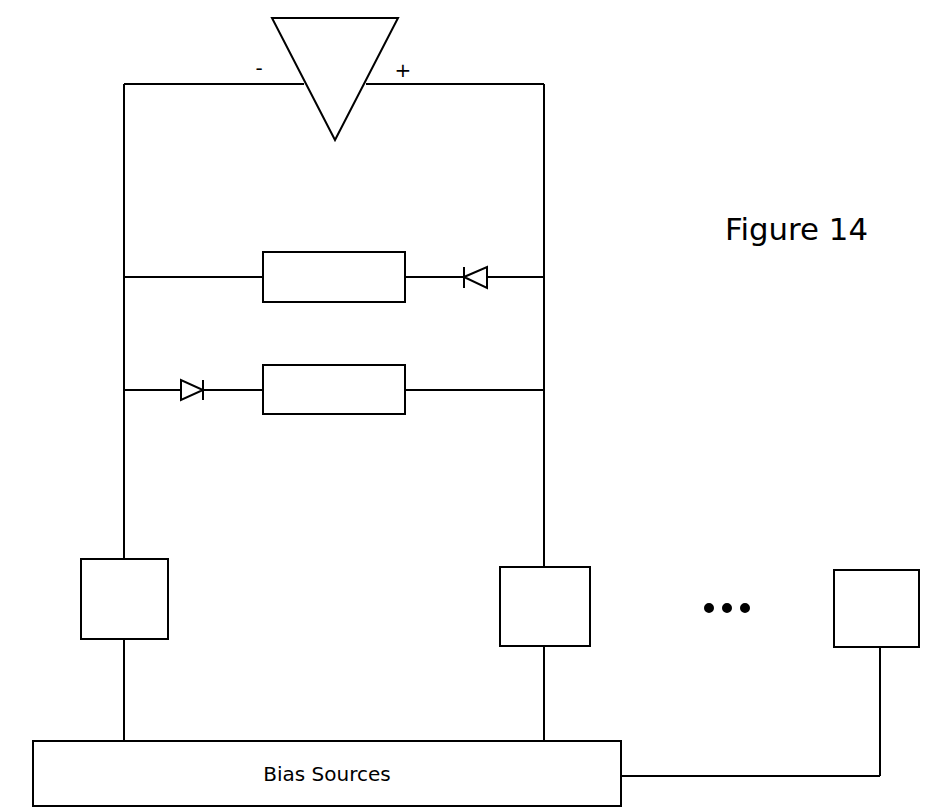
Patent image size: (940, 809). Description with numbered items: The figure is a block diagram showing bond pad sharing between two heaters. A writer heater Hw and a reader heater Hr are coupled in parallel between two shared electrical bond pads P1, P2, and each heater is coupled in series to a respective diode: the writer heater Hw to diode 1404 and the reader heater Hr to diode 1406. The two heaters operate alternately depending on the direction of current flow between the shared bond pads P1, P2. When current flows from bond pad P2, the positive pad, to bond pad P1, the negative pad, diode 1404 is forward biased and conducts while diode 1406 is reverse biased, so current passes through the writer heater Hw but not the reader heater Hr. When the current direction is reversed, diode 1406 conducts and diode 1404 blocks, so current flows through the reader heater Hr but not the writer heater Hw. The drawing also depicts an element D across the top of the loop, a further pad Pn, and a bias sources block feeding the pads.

The diode 1404 is at (478, 268).
The diode 1406 is at (192, 400).
The detector D is at (335, 79).
The writer heater Hw is at (334, 277).
The reader heater Hr is at (334, 389).
The shared electrical bond pad P1 is at (124, 599).
The shared electrical bond pad P2 is at (545, 606).
The pad n Pn is at (876, 608).